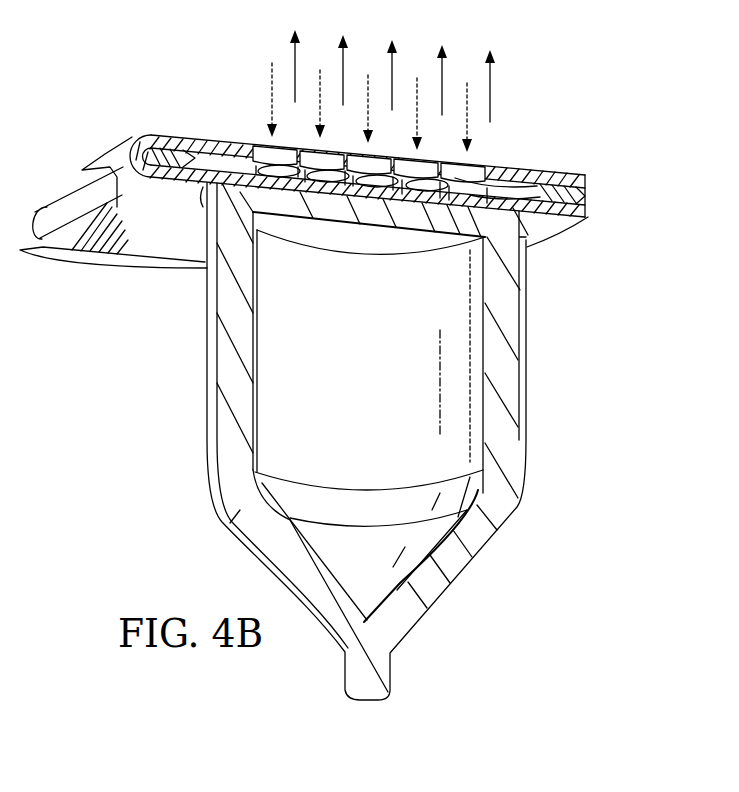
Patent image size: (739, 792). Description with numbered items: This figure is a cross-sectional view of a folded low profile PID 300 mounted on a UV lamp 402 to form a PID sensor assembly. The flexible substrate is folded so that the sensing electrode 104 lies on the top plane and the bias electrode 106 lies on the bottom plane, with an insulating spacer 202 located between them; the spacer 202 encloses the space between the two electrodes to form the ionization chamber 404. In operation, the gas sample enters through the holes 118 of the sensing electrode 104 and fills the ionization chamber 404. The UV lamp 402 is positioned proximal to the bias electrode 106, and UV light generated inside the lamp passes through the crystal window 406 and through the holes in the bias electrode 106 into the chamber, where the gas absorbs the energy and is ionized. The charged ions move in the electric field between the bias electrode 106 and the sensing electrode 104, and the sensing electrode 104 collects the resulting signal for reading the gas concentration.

The folded low profile PID 300 is at (564, 139).
The sensing electrode 104 is at (247, 142).
The holes 118 is at (320, 168).
The ionization chamber 404 is at (507, 182).
The spacer 202 is at (183, 133).
The UV lamp 402 is at (176, 397).
The crystal window 406 is at (360, 243).
The bias electrode 106 is at (445, 196).